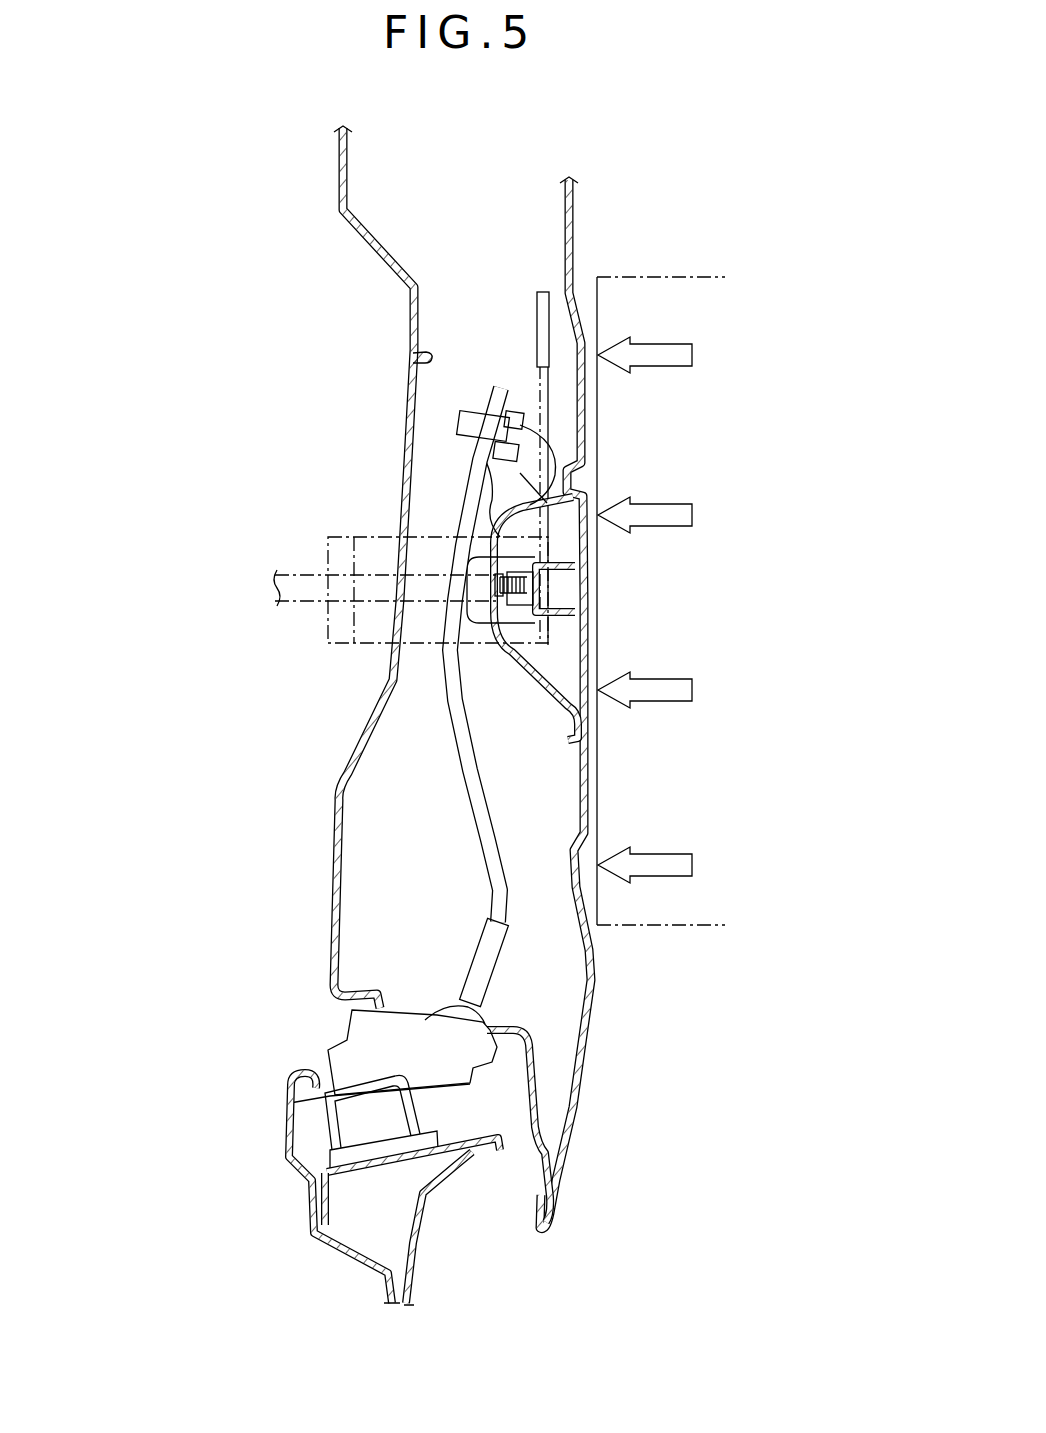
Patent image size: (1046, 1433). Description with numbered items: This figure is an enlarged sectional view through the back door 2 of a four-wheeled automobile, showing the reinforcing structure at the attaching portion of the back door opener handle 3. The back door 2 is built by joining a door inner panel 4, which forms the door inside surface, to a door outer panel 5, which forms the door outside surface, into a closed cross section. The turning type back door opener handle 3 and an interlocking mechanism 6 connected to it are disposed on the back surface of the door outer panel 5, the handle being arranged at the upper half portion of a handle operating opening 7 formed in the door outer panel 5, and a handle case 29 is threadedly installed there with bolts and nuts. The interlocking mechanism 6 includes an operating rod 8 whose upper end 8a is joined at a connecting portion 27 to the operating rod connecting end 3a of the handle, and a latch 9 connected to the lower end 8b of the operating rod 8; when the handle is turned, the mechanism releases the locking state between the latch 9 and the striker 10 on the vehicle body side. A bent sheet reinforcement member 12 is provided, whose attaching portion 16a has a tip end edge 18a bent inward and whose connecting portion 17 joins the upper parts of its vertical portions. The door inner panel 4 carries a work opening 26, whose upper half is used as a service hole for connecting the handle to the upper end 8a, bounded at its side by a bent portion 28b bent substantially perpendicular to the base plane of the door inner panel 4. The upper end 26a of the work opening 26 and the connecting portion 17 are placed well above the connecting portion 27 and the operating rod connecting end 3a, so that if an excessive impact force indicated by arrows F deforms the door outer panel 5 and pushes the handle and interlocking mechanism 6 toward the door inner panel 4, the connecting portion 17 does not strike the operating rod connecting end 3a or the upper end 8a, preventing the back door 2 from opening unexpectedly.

The back door 2 is at (582, 215).
The back door opener handle 3 is at (580, 580).
The operating rod connecting end 3a is at (523, 443).
The door inner panel 4 is at (336, 890).
The door outer panel 5 is at (592, 990).
The interlocking mechanism 6 is at (458, 768).
The handle operating opening 7 is at (560, 717).
The operating rod 8 is at (457, 712).
The upper end of the operating rod 8a is at (490, 403).
The lower end of the operating rod 8b is at (470, 992).
The latch 9 is at (355, 1040).
The striker 10 is at (330, 1097).
The reinforcement member 12 is at (437, 535).
The attaching portion 16a is at (425, 635).
The connecting portion 17 is at (540, 327).
The tip end edge 18a is at (335, 622).
The work opening 26 is at (336, 810).
The upper end of the work opening 26a is at (412, 362).
The connecting portion 27 is at (458, 428).
The bent portion 28b is at (373, 548).
The handle case 29 is at (530, 670).
The arrows indicating impact force F is at (673, 503).